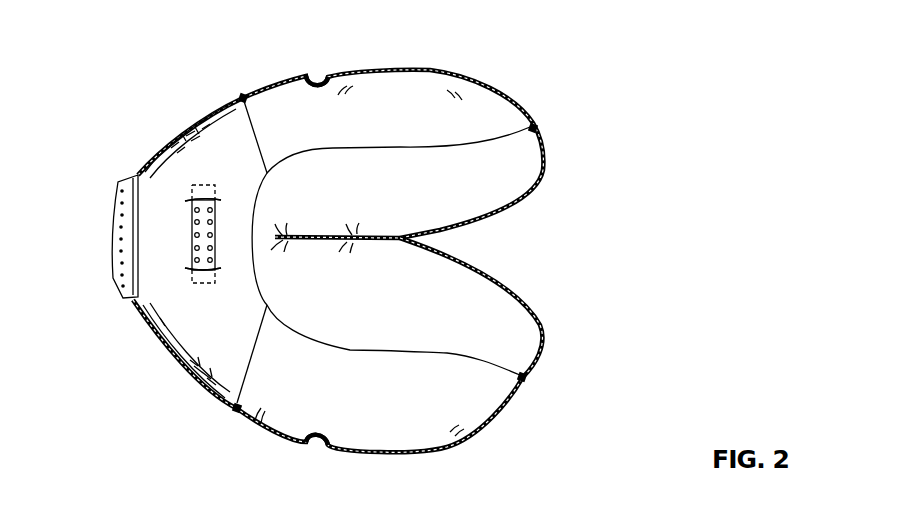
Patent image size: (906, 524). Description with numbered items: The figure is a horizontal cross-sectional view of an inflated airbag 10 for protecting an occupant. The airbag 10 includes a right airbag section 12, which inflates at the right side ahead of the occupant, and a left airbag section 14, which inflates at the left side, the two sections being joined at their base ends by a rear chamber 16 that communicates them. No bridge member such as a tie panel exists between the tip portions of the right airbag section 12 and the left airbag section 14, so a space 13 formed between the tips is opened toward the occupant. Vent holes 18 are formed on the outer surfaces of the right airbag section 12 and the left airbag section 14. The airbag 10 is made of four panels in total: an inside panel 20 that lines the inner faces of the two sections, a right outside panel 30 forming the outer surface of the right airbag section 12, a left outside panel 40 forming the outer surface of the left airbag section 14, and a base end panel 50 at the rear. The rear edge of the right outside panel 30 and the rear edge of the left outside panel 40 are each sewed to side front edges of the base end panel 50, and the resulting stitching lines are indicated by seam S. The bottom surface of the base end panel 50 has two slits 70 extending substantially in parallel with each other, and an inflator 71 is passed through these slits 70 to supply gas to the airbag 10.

The airbag 10 is at (369, 253).
The right airbag section 12 is at (518, 76).
The space 13 is at (462, 243).
The left airbag section 14 is at (564, 364).
The rear chamber 16 is at (178, 200).
The vent hole 18 is at (317, 76).
The inside panel 20 is at (523, 293).
The right outside panel 30 is at (430, 68).
The left outside panel 40 is at (473, 443).
The base end panel 50 is at (178, 373).
The slit 70 is at (210, 194).
The inflator 71 is at (192, 242).
The seam S is at (247, 100).